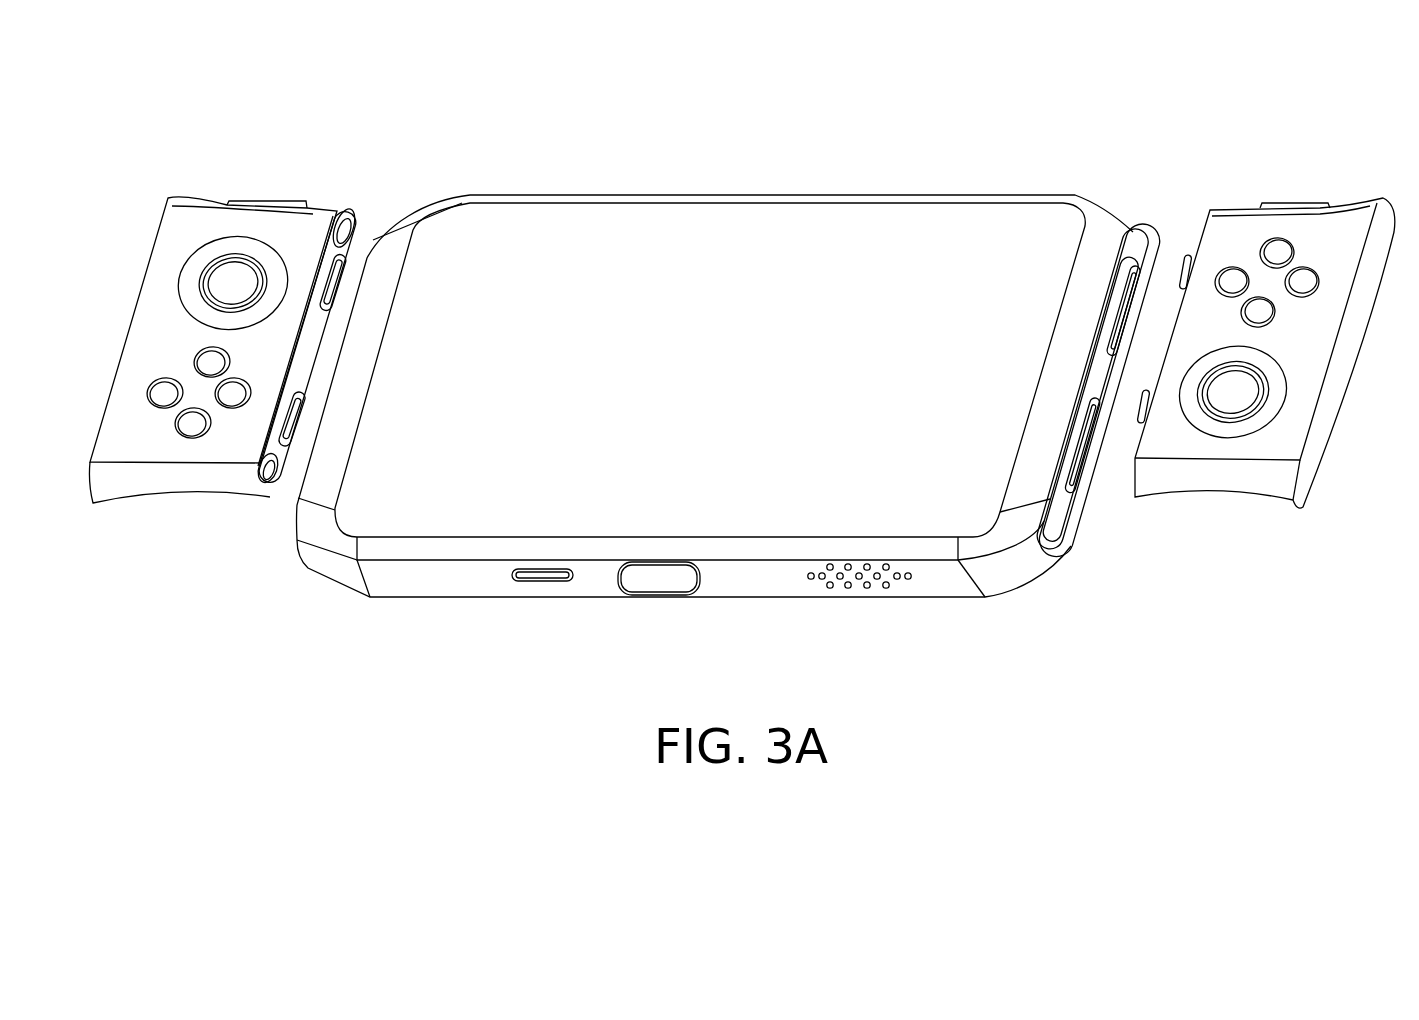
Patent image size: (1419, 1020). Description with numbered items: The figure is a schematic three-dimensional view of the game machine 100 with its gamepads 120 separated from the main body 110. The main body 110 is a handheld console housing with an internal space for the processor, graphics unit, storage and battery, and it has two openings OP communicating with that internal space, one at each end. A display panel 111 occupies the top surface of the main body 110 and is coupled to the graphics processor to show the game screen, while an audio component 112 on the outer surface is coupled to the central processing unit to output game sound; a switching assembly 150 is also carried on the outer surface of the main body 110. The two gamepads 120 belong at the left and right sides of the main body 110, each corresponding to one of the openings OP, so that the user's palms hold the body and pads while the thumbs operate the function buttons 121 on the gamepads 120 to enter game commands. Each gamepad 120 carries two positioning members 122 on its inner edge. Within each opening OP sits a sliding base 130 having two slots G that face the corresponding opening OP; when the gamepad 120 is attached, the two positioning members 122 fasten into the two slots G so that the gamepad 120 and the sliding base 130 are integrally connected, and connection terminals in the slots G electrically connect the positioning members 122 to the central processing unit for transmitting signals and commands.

The game machine 100 is at (1302, 686).
The main body 110 is at (952, 590).
The display panel 111 is at (672, 248).
The audio component 112 is at (867, 578).
The gamepad 120 is at (187, 247).
The function buttons 121 is at (1277, 245).
The positioning members 122 is at (307, 410).
The sliding base 130 is at (1067, 517).
The switching assembly 150 is at (662, 582).
The opening OP is at (1138, 232).
The slot G is at (1140, 293).